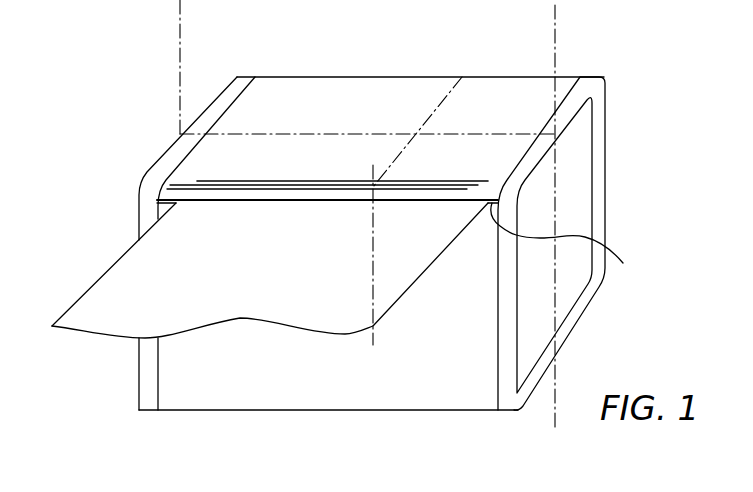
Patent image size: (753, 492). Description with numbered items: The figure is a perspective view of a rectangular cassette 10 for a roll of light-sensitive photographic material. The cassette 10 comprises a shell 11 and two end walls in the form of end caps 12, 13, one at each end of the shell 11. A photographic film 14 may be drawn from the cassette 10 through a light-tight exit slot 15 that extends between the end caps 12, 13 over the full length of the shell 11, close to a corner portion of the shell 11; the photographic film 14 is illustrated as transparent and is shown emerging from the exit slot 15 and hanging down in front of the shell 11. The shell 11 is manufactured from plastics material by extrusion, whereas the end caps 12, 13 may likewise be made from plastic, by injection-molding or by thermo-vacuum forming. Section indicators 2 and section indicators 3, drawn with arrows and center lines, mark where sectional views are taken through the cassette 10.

The tape cassette / cartridge assembly 10 is at (347, 230).
The housing body 11 is at (238, 397).
The left end frame 12 is at (146, 203).
The right end frame 13 is at (573, 198).
The cover flap 14 is at (90, 301).
The pull cord 15 is at (576, 240).
The section line for FIG. 2 is at (172, 69).
The section line for FIG. 3 is at (462, 174).